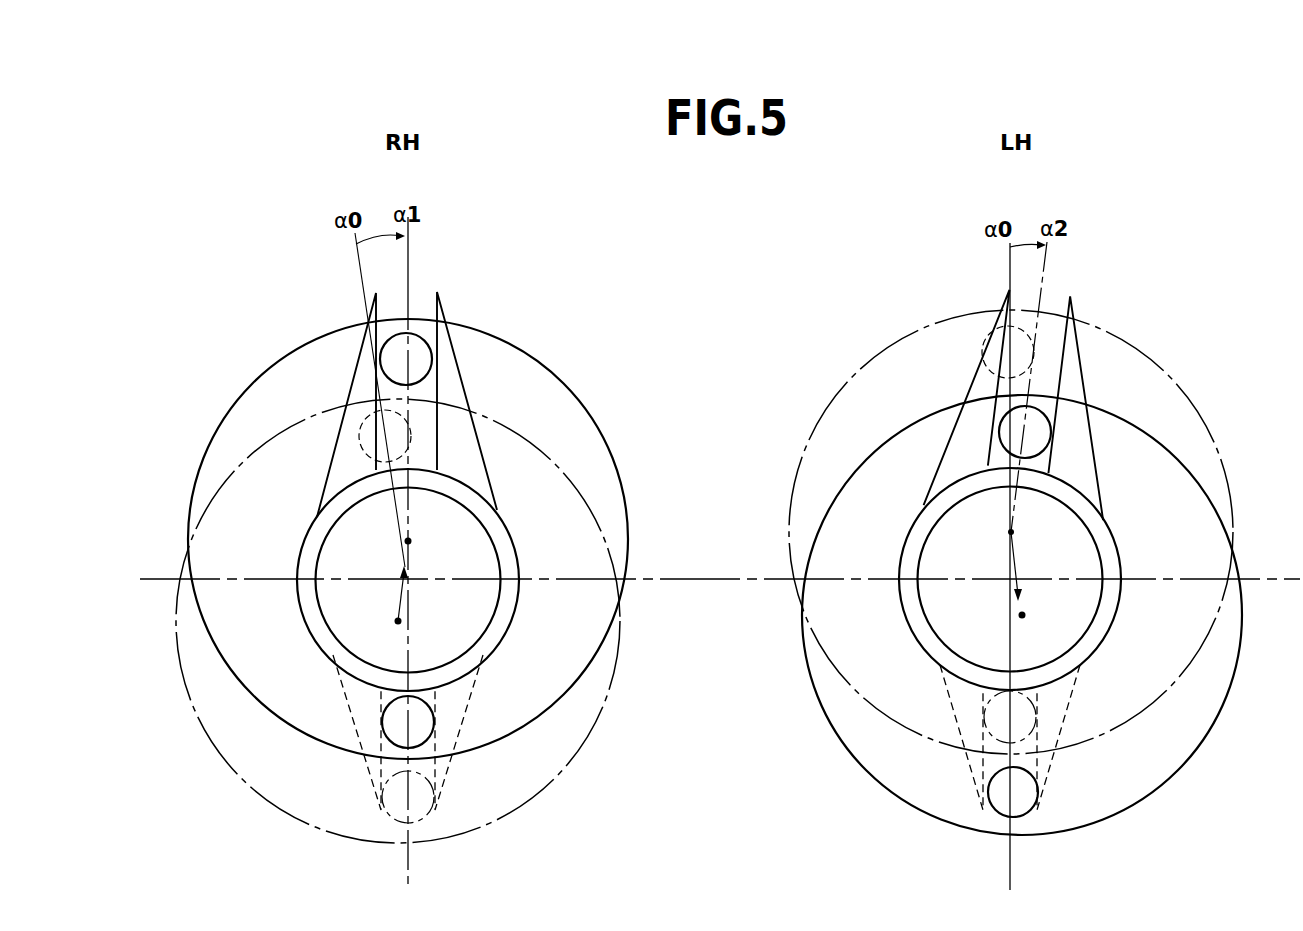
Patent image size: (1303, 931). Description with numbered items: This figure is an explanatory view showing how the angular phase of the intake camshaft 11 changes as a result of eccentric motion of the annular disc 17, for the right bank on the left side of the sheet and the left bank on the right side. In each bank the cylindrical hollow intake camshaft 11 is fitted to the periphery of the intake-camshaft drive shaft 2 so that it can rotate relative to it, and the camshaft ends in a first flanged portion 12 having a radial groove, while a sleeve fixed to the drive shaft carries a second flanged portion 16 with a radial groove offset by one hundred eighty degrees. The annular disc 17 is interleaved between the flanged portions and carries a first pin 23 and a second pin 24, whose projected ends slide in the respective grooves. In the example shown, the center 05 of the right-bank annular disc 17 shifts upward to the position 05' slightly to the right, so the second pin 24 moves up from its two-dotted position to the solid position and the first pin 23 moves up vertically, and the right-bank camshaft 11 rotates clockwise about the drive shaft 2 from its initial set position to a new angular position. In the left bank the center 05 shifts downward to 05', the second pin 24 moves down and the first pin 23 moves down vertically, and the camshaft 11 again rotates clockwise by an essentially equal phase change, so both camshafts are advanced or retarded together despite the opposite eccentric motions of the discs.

The intake-camshaft drive shaft 2 is at (330, 598).
The intake camshaft 11 is at (510, 550).
The first flanged portion 12 is at (730, 732).
The second flanged portion 16 is at (455, 380).
The annular disc 17 is at (567, 380).
The first pin 23 is at (393, 720).
The second pin 24 is at (415, 348).
The center of the annular disc 05 is at (683, 574).
The shifted center of the annular disc 05' is at (748, 579).